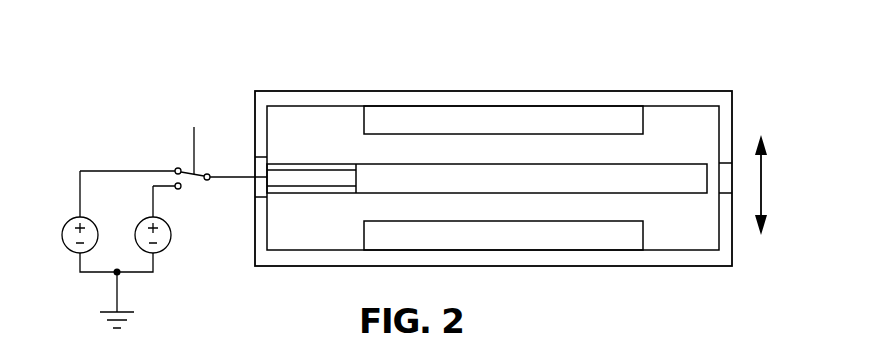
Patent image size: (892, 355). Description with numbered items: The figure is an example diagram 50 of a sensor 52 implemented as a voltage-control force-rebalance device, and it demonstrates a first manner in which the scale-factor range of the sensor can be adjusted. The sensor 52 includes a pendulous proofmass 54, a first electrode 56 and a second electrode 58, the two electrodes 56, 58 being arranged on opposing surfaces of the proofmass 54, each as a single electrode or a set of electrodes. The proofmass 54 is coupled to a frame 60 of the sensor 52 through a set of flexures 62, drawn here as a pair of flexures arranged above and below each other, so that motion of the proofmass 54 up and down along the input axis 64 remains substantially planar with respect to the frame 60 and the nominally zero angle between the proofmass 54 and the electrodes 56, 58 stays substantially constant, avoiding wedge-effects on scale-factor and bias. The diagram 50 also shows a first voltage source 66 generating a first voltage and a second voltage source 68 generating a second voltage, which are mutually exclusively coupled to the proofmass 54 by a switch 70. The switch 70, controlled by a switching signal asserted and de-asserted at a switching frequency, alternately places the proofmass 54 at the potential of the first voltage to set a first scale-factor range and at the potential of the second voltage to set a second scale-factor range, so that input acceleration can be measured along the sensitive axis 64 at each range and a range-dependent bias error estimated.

The diagram 50 is at (104, 33).
The sensor 52 is at (270, 73).
The pendulous proofmass 54 is at (425, 162).
The first electrode 56 is at (623, 135).
The second electrode 58 is at (628, 220).
The frame 60 is at (615, 91).
The flexures 62 is at (287, 162).
The input axis 64 is at (762, 198).
The first voltage source 66 is at (77, 255).
The second voltage source 68 is at (163, 250).
The switch 70 is at (172, 153).